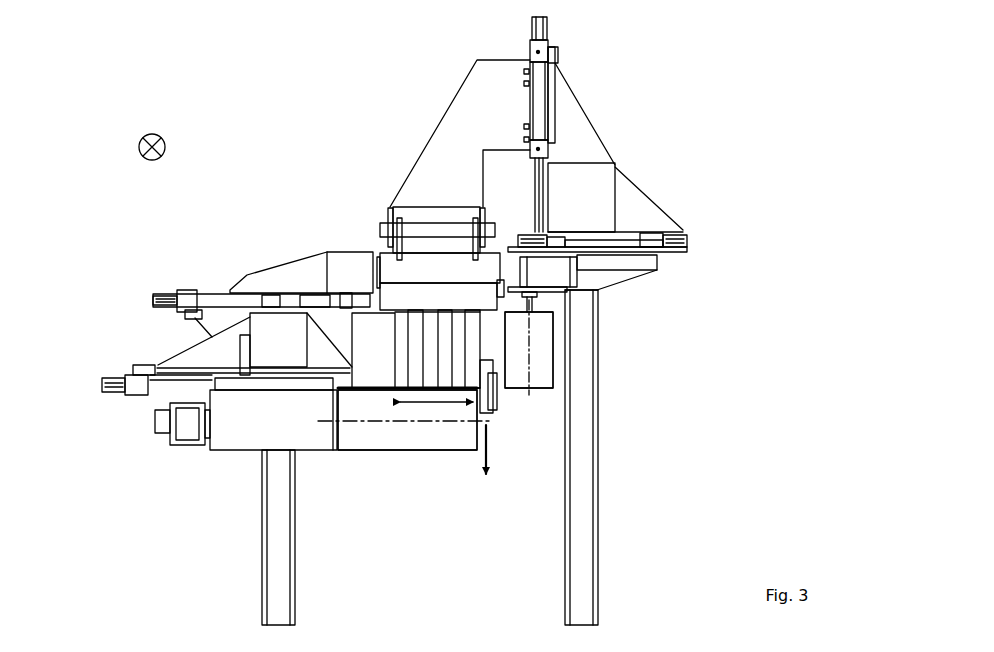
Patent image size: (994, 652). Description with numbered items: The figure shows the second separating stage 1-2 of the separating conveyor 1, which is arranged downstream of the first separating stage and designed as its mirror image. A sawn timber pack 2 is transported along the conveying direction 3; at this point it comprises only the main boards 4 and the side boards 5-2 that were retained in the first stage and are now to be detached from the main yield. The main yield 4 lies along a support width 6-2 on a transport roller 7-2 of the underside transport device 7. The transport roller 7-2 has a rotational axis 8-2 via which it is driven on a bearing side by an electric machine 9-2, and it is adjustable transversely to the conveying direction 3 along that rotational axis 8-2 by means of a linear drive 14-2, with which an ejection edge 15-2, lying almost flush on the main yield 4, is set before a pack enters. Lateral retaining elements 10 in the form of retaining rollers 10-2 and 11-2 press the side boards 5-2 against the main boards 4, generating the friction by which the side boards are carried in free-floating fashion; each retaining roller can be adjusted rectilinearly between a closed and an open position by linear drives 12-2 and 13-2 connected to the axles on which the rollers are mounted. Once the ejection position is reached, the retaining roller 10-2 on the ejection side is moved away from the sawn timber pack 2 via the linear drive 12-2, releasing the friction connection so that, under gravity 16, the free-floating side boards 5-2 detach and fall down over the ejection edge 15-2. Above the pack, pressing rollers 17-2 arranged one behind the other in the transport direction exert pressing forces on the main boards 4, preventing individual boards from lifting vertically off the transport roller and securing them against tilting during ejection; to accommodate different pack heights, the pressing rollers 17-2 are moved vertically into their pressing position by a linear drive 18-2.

The separating conveyor 1 is at (699, 53).
The sawn timber pack 2 is at (400, 322).
The conveying direction 3 is at (145, 163).
The main boards 4 is at (430, 327).
The second separating stage 1-2 is at (279, 260).
The side boards 5-2 is at (507, 389).
The support width 6-2 is at (412, 404).
The transport device 7 is at (418, 460).
The transport roller 7-2 is at (416, 453).
The rotational axis 8-2 is at (363, 422).
The electric machine 9-2 is at (153, 433).
The lateral retaining elements 10 is at (400, 345).
The retaining roller 10-2 is at (553, 365).
The retaining roller 11-2 is at (352, 365).
The linear drive 12-2 is at (685, 237).
The linear drive 13-2 is at (150, 295).
The linear drive 14-2 is at (118, 390).
The ejection edge 15-2 is at (477, 405).
The gravity 16 is at (489, 470).
The pressing rollers 17-2 is at (470, 290).
The linear drive 18-2 is at (527, 50).